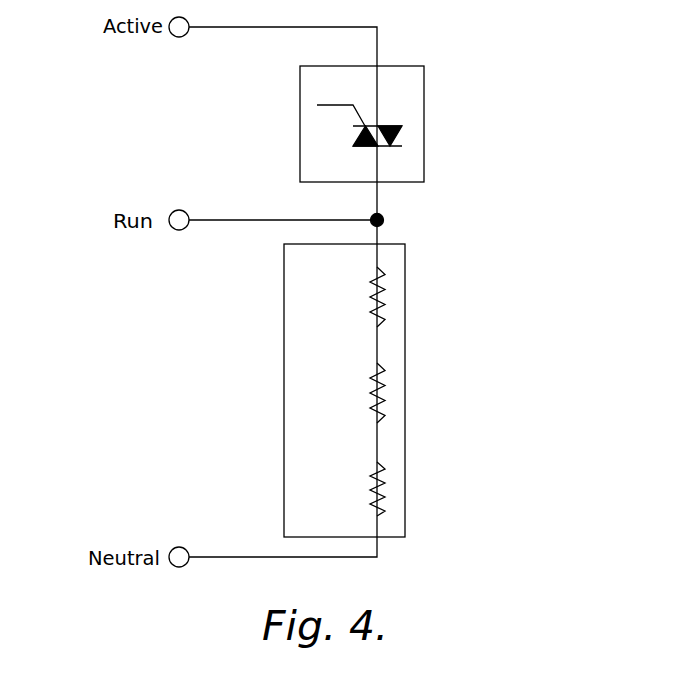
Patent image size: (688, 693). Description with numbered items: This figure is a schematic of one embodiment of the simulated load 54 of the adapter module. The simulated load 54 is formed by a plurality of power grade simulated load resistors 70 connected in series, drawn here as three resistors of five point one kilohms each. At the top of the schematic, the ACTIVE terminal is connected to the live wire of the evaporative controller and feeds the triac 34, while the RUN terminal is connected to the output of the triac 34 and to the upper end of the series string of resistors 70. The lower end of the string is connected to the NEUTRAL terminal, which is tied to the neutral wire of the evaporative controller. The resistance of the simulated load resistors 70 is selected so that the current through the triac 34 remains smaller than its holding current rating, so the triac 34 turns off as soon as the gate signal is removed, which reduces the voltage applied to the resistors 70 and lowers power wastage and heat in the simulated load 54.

The triac 34 is at (424, 123).
The simulated load 54 is at (323, 390).
The simulated load resistors 70 is at (400, 389).